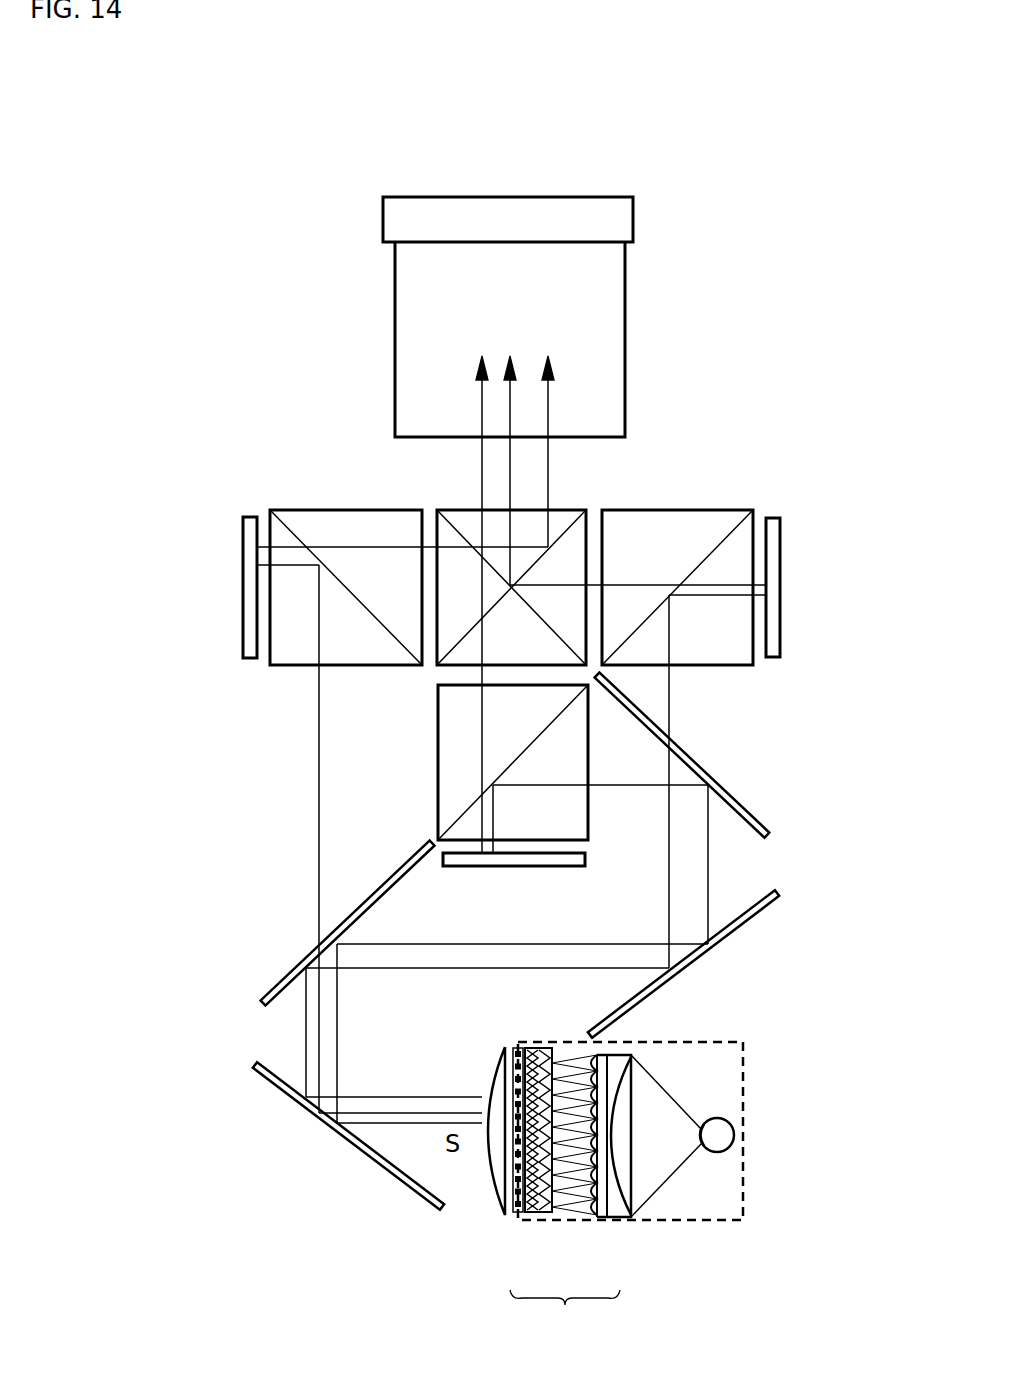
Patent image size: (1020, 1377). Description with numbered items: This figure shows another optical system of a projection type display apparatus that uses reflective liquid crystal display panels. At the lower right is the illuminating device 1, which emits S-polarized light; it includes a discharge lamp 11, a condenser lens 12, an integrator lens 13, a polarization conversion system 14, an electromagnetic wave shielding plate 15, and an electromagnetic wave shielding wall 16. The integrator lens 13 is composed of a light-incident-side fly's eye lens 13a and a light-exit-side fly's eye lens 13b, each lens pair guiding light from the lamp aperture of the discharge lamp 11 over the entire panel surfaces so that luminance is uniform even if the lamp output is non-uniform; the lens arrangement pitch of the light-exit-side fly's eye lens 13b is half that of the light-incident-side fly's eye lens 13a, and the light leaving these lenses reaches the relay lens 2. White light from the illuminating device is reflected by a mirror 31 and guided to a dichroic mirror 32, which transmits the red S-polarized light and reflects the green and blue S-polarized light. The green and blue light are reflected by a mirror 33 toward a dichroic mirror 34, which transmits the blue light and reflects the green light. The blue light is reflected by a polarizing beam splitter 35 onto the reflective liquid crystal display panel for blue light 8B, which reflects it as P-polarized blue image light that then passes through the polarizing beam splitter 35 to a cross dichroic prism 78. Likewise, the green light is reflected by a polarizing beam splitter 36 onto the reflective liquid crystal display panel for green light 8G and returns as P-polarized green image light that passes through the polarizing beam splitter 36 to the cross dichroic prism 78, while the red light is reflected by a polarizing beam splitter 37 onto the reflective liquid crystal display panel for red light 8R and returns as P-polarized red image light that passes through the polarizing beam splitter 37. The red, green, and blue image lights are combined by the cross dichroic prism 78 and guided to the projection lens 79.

The illuminating device 1 is at (609, 1145).
The relay lens 2 is at (499, 1045).
The reflective liquid crystal display panel for red light 8R is at (251, 582).
The reflective liquid crystal display panel for green light 8G is at (512, 858).
The reflective liquid crystal display panel for blue light 8B is at (777, 587).
The discharge lamp 11 is at (720, 1150).
The condenser lens 12 is at (622, 1219).
The integrator lens 13 is at (566, 1197).
The light-incident-side fly's eye lens 13a is at (597, 1222).
The light-exit-side fly's eye lens 13b is at (533, 1222).
The polarization conversion system 14 is at (552, 1046).
The electromagnetic wave shielding plate 15 is at (518, 1046).
The electromagnetic wave shielding wall 16 is at (707, 1042).
The mirror 31 is at (253, 1068).
The dichroic mirror 32 is at (258, 1000).
The mirror 33 is at (775, 905).
The dichroic mirror 34 is at (768, 835).
The polarizing beam splitter 35 is at (678, 515).
The polarizing beam splitter 36 is at (446, 757).
The polarizing beam splitter 37 is at (322, 514).
The cross dichroic prism 78 is at (567, 512).
The projection lens 79 is at (603, 304).